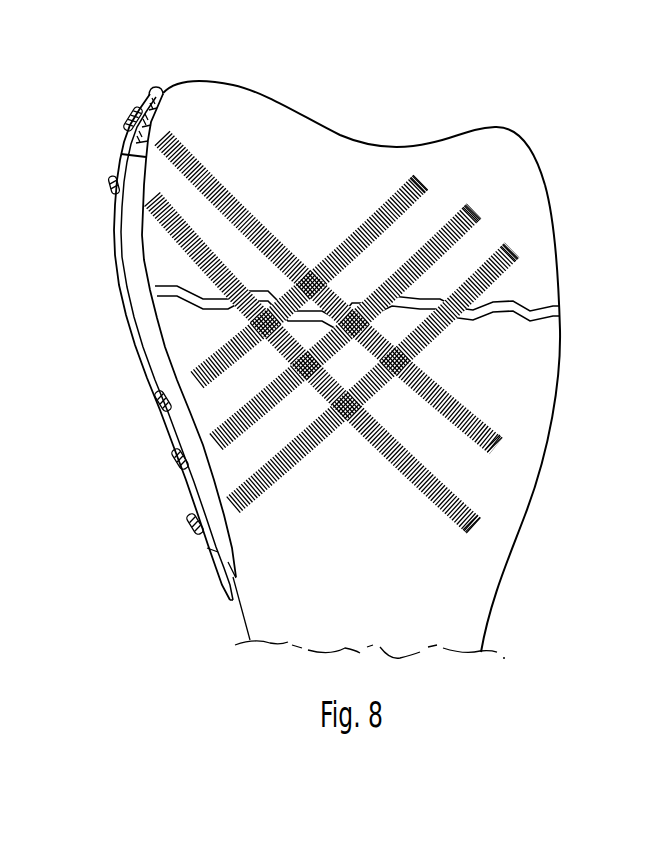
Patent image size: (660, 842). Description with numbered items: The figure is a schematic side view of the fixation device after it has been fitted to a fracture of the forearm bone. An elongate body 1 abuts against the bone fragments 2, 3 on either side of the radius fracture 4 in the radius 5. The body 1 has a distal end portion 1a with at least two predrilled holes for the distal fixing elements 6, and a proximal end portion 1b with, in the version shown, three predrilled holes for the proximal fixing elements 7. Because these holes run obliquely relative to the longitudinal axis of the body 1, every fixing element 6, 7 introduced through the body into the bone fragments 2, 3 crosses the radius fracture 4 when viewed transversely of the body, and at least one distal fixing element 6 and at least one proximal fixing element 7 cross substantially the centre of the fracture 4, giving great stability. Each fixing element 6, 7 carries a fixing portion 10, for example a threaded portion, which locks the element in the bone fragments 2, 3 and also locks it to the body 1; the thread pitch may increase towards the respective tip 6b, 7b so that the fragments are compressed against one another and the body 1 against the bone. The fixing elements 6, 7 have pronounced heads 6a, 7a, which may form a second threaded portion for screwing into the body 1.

The body 1 is at (125, 340).
The distal end portion 1a is at (138, 150).
The proximal end portion 1b is at (218, 559).
The bone fragment 2 is at (292, 120).
The bone fragment 3 is at (542, 353).
The radius fracture 4 is at (552, 312).
The radius 5 is at (566, 228).
The fixing element 6 is at (169, 246).
The head 6a is at (123, 118).
The tip 6b is at (484, 528).
The fixing element 7 is at (306, 403).
The head 7a is at (178, 454).
The tip 7b is at (516, 248).
The fixing portion 10 is at (422, 415).